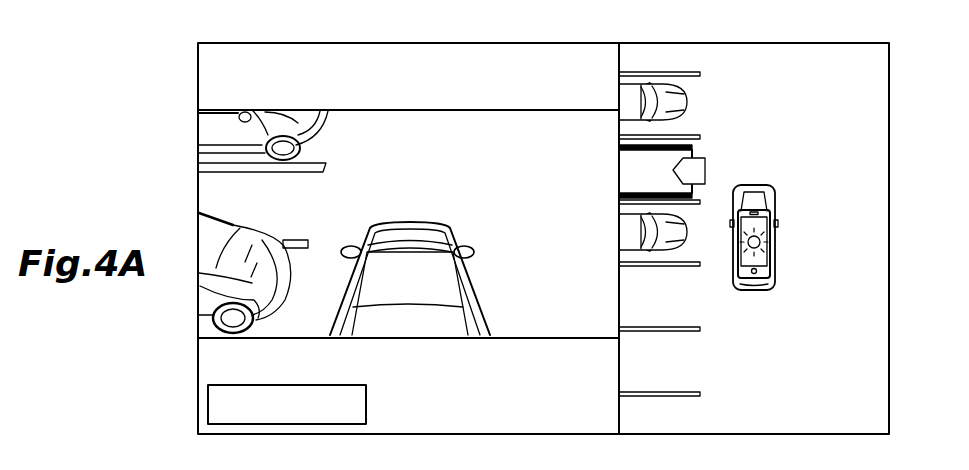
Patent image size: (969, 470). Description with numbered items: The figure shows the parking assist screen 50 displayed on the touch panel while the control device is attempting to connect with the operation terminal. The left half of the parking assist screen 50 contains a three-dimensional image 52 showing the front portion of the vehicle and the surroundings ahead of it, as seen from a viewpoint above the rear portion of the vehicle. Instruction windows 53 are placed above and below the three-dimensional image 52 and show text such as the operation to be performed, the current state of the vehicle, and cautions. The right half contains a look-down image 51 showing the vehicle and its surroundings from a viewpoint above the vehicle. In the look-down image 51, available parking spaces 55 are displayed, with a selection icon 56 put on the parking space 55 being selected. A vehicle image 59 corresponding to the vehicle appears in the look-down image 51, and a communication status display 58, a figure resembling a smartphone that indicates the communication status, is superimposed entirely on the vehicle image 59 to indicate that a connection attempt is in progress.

The parking assist screen 50 is at (190, 112).
The look-down image 51 is at (873, 297).
The three-dimensional image 52 is at (230, 209).
The instruction windows 53 is at (437, 52).
The parking spaces 55 is at (693, 149).
The selection icon 56 is at (706, 173).
The communication status display 58 is at (765, 257).
The vehicle image 59 is at (758, 290).